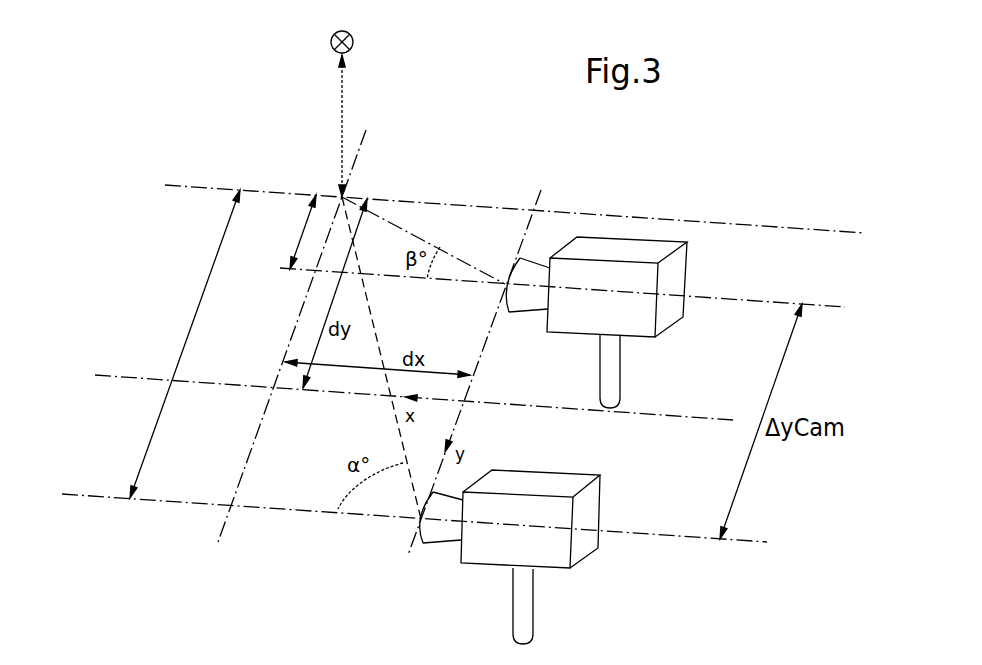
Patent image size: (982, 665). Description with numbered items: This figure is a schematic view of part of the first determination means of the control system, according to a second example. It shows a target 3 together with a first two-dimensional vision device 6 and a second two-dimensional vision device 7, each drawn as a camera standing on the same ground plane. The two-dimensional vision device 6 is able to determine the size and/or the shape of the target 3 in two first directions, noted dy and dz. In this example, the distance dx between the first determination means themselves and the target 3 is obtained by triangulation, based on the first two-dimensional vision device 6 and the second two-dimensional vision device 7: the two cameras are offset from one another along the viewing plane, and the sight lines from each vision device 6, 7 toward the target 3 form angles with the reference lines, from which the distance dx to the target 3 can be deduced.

The target 3 is at (330, 40).
The two-dimensional vision device 6 is at (688, 272).
The second two-dimensional vision device 7 is at (590, 548).